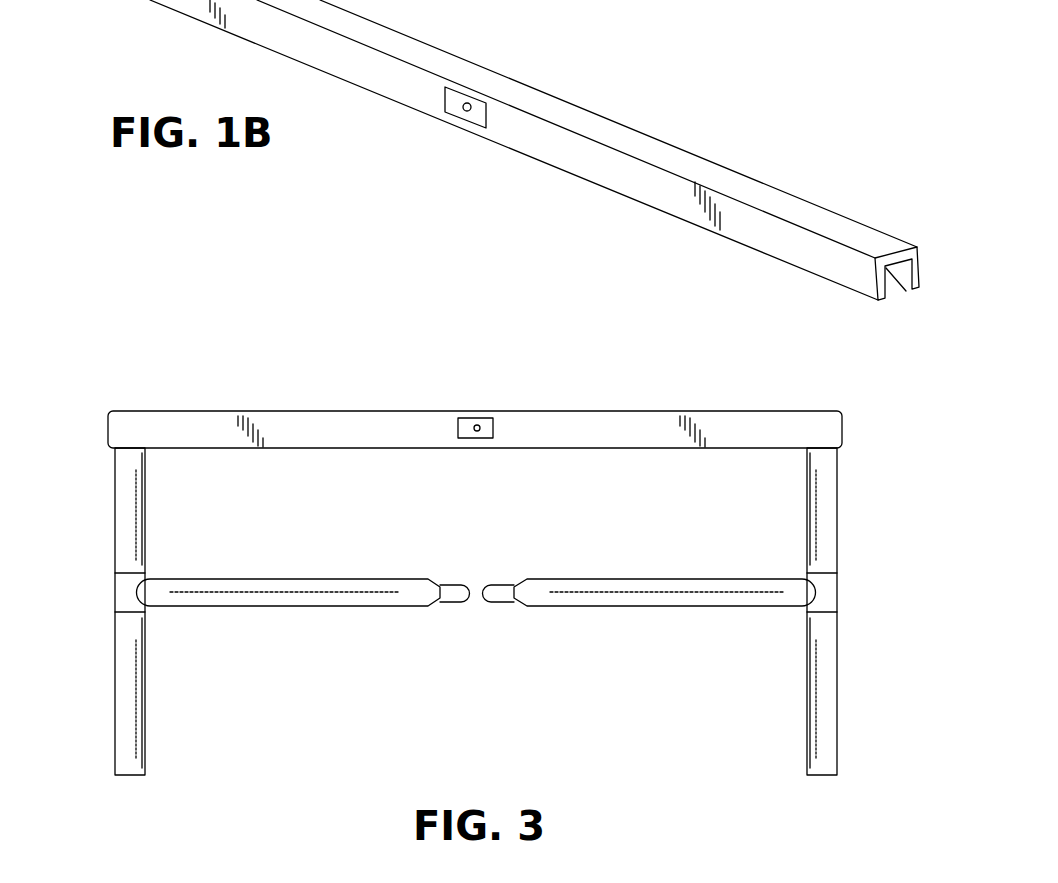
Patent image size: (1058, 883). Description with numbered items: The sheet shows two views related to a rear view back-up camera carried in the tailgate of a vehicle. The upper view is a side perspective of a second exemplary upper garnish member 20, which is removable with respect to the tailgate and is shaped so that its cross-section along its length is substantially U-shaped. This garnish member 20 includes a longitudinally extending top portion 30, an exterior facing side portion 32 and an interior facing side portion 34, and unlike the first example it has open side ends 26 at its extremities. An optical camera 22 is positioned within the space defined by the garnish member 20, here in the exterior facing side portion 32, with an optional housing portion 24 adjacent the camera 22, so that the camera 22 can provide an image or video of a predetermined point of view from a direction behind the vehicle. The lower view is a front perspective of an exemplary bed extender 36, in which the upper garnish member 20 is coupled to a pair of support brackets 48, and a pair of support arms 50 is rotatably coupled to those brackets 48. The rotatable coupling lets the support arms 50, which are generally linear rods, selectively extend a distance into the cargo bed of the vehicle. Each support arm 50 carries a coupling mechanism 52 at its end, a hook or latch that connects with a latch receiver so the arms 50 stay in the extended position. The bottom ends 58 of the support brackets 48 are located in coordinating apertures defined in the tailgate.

In FIG. 1B, the upper garnish member 20 is at (777, 103).
In FIG. 1B, the optical camera 22 is at (462, 110).
In FIG. 3, the optical camera 22 is at (478, 418).
In FIG. 1B, the housing portion 24 is at (477, 103).
In FIG. 3, the housing portion 24 is at (487, 434).
In FIG. 1B, the open side ends 26 is at (893, 300).
In FIG. 3, the longitudinally extending top portion 30 is at (644, 410).
In FIG. 1B, the exterior facing side portion 32 is at (582, 151).
In FIG. 3, the exterior facing side portion 32 is at (313, 438).
In FIG. 1B, the interior facing side portion 34 is at (665, 134).
In FIG. 3, the bed extender 36 is at (84, 427).
In FIG. 3, the support brackets 48 is at (115, 536).
In FIG. 3, the support arms 50 is at (277, 608).
In FIG. 3, the coupling mechanism 52 is at (453, 590).
In FIG. 3, the bottom ends 58 is at (145, 761).